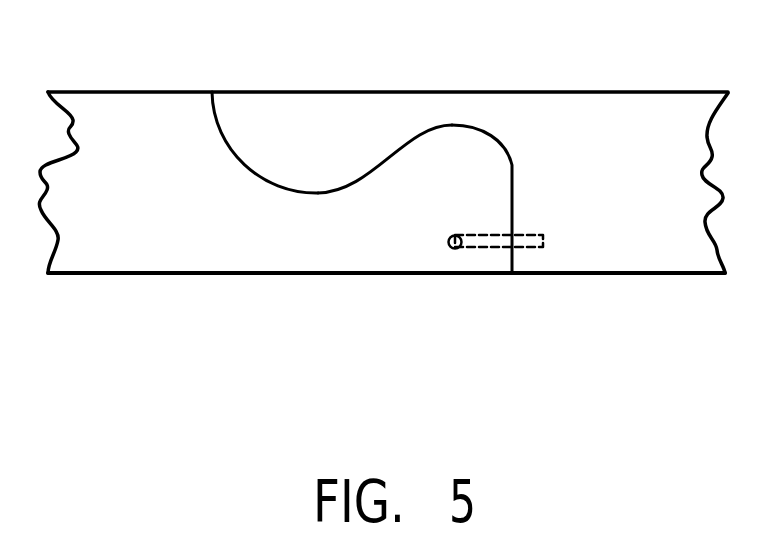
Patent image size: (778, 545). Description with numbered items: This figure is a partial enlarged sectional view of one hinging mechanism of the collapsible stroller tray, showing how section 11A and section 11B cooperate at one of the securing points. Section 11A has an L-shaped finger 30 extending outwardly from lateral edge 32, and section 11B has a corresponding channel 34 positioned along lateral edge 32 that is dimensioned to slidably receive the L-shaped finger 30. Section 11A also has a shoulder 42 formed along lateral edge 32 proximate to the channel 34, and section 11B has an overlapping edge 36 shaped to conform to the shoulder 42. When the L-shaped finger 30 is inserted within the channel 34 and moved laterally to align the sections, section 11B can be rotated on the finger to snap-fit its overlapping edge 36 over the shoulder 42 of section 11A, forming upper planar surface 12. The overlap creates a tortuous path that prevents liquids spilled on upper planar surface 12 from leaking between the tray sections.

The upper planar surface 12 is at (498, 92).
The section 11A is at (610, 258).
The section 11B is at (358, 252).
The overlapping edge 36 is at (263, 92).
The shoulder 42 is at (367, 105).
The lateral edge 32 is at (512, 167).
The L-shaped finger 30 is at (525, 235).
The channel 34 is at (457, 250).